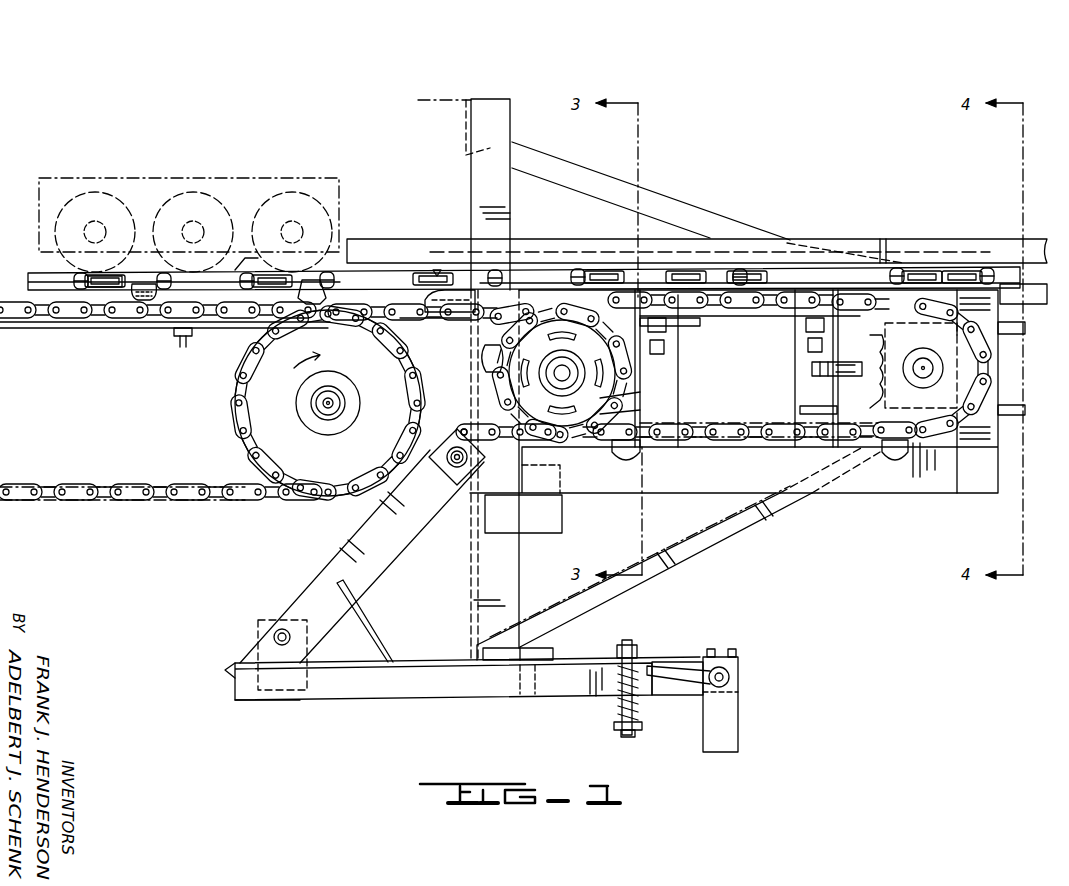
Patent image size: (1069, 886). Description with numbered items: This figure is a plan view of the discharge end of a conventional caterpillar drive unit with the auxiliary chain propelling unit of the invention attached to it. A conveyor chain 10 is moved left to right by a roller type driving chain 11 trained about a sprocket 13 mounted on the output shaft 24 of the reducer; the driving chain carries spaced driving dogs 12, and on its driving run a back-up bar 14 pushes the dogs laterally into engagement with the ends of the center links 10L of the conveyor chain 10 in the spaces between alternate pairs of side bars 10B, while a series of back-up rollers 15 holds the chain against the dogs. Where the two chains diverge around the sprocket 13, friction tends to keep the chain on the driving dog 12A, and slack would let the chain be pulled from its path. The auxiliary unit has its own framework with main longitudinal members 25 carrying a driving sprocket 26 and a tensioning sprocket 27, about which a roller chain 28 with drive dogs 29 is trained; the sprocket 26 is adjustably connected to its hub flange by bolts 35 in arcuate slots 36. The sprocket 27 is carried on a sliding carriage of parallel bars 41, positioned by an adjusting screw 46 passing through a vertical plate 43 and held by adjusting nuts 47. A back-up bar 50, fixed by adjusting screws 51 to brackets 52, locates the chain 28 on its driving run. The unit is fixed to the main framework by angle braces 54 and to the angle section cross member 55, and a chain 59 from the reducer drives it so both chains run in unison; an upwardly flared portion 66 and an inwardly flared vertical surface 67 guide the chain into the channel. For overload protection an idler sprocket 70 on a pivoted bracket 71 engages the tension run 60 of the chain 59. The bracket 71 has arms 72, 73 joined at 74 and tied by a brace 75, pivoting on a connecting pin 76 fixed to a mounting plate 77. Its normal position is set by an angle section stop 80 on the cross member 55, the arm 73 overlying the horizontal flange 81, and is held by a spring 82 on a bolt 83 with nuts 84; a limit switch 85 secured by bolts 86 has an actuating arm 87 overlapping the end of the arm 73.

The conveyor chain 10 is at (36, 272).
The back-up rollers 15 is at (108, 274).
The center links 10L is at (236, 270).
The side bars 10B is at (95, 288).
The driving chain 11 is at (120, 318).
The driving dogs 12 is at (144, 302).
The back-up bar 14 is at (229, 326).
The driving dog 12A is at (312, 304).
The sprocket 13 is at (305, 403).
The output shaft 24 is at (331, 406).
The angle section cross member 55 is at (508, 607).
The angle braces 54 is at (727, 225).
The main longitudinal members 25 is at (988, 470).
The parallel bars 41 is at (1012, 329).
The roller chain 28 is at (570, 436).
The driving sprocket 26 is at (484, 350).
The drive dogs 29 is at (626, 458).
The tension run 60 is at (464, 428).
The idler sprocket 70 is at (466, 457).
The upwardly flared portion 66 is at (437, 276).
The inwardly flared vertical surface 67 is at (424, 302).
The chain 59 is at (415, 320).
The back-up bar 50 is at (682, 318).
The adjusting screws 51 is at (667, 334).
The brackets 52 is at (670, 350).
The bolts 35 is at (640, 393).
The arcuate slots 36 is at (640, 411).
The adjusting nuts 47 is at (812, 370).
The vertical plate 43 is at (800, 408).
The adjusting screw 46 is at (856, 368).
The tensioning sprocket 27 is at (921, 365).
The arm 73 is at (426, 690).
The connection 74 is at (245, 663).
The bracket 71 is at (286, 703).
The mounting plate 77 is at (309, 650).
The connecting pin 76 is at (273, 633).
The arm 72 is at (352, 585).
The brace 75 is at (372, 636).
The nuts 84 is at (633, 645).
The spring 82 is at (640, 712).
The bolt 83 is at (627, 737).
The horizontal flange 81 is at (663, 686).
The angle section stop 80 is at (672, 657).
The limit switch 85 is at (738, 723).
The bolts 86 is at (731, 650).
The actuating arm 87 is at (732, 683).